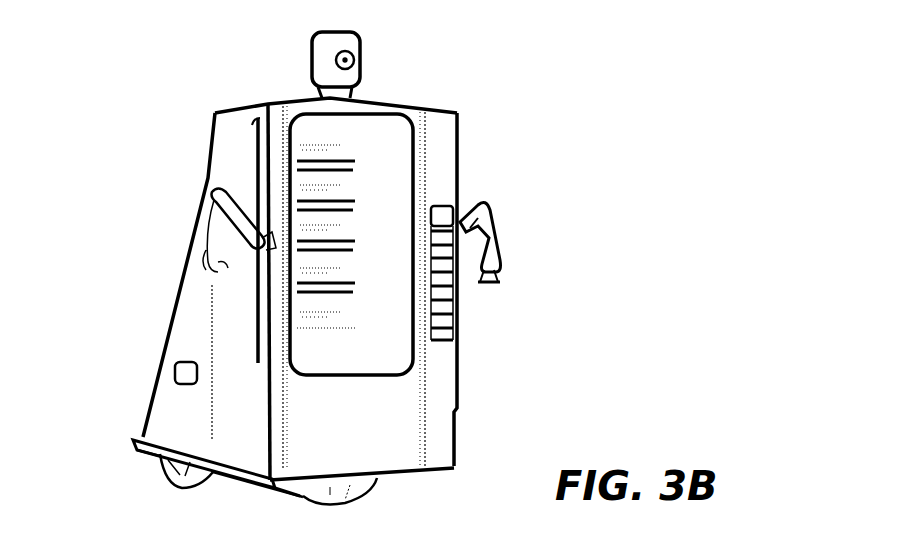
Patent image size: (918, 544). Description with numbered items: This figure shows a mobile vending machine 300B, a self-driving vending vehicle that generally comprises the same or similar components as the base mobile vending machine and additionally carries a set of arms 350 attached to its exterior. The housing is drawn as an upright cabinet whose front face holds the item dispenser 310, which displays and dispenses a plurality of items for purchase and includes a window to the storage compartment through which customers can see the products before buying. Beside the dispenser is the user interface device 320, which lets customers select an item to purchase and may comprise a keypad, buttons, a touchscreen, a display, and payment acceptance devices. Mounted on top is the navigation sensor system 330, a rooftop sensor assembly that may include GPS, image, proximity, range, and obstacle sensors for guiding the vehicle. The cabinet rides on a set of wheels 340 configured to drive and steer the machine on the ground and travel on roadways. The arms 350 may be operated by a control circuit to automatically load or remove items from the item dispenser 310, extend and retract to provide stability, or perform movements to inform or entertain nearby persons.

The mobile vending machine 300B is at (622, 90).
The item dispenser 310 is at (353, 285).
The user interface device 320 is at (458, 307).
The navigation sensor system 330 is at (352, 64).
The wheels 340 is at (148, 458).
The arms 350 is at (497, 236).